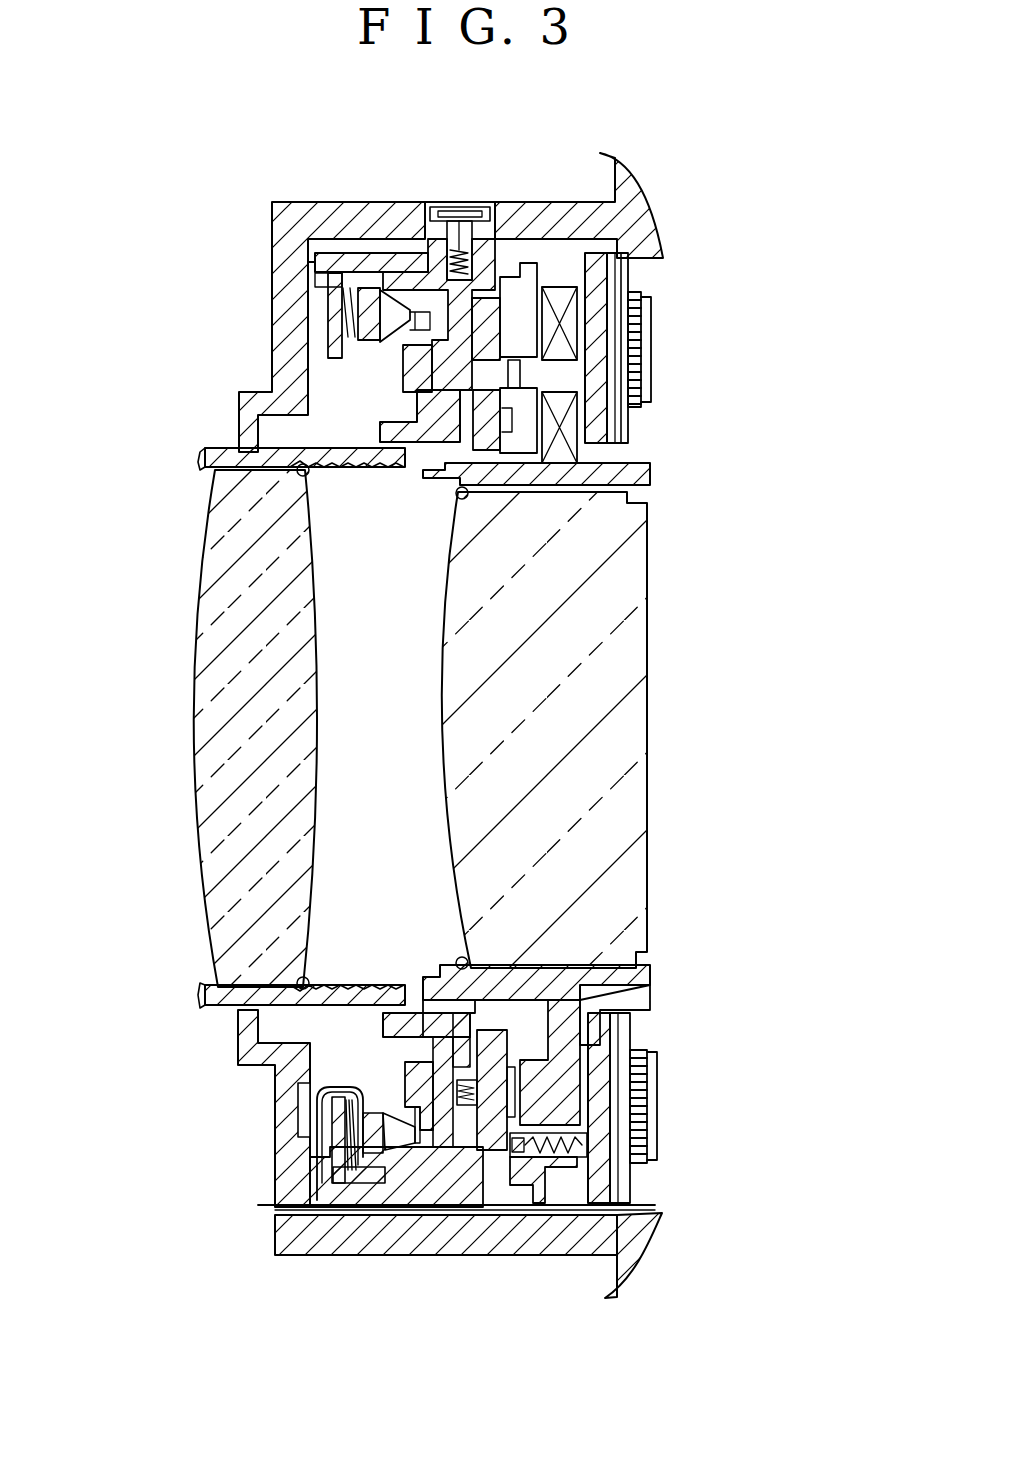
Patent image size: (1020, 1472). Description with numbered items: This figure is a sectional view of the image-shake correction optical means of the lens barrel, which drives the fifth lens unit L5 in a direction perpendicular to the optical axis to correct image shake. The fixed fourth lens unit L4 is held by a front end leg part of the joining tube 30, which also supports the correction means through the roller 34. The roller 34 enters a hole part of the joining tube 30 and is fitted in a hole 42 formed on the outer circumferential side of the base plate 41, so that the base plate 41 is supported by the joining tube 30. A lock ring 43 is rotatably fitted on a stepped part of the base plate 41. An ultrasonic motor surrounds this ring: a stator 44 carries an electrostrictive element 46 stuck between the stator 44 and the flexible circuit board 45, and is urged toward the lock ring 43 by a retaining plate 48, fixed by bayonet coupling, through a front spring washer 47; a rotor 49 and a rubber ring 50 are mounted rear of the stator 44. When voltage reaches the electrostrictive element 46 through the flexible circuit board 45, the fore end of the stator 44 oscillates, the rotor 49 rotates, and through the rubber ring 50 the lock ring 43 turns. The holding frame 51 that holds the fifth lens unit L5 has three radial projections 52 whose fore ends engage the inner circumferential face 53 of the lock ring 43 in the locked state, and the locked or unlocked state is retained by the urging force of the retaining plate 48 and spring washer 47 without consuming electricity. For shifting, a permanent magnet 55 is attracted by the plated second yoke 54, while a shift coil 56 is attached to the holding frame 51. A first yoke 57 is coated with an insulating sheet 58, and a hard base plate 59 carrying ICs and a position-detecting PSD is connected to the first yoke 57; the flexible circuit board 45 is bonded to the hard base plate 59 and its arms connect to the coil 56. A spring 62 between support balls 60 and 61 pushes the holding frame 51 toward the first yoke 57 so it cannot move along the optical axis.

The joining tube 30 is at (285, 257).
The roller 34 is at (427, 237).
The base plate 41 is at (340, 253).
The hole 42 is at (420, 258).
The lock ring 43 is at (388, 432).
The stator 44 is at (358, 1165).
The flexible circuit board 45 is at (258, 1205).
The electrostrictive element 46 is at (347, 1170).
The front spring washer 47 is at (346, 1148).
The retaining plate 48 is at (340, 1160).
The rotor 49 is at (405, 1077).
The rubber ring 50 is at (440, 1150).
The holding frame 51 is at (640, 478).
The projections 52 is at (533, 967).
The inner circumferential face 53 is at (430, 1000).
The magnetic body (second yoke) 54 is at (488, 305).
The permanent magnet 55 is at (520, 312).
The shift coil 56 is at (545, 295).
The first yoke 57 is at (600, 283).
The insulating sheet 58 is at (615, 420).
The hard base plate 59 is at (622, 432).
The support ball 60 is at (515, 1160).
The support ball 61 is at (582, 1143).
The spring 62 is at (555, 1133).
The fourth lens unit L4 is at (215, 697).
The fifth lens unit L5 is at (630, 703).